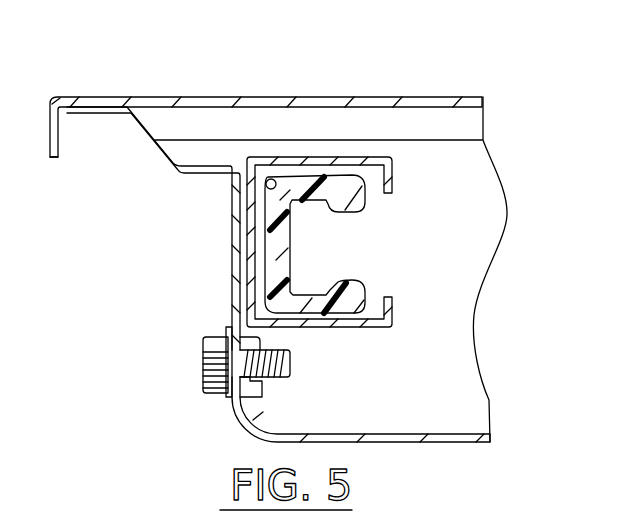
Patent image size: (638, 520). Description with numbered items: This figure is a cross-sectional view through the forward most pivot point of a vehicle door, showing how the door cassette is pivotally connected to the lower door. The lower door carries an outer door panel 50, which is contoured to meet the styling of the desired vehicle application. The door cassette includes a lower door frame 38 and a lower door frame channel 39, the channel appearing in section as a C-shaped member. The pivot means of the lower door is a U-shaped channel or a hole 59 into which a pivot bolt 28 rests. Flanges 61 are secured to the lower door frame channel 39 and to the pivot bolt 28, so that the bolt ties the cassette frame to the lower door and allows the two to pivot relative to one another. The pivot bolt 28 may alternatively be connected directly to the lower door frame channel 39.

The outer door panel 50 is at (192, 97).
The flange 61 is at (385, 333).
The lower door frame channel 39 is at (267, 157).
The lower door frame 38 is at (342, 185).
The pivot bolt 28 is at (213, 338).
The hole 59 is at (262, 347).